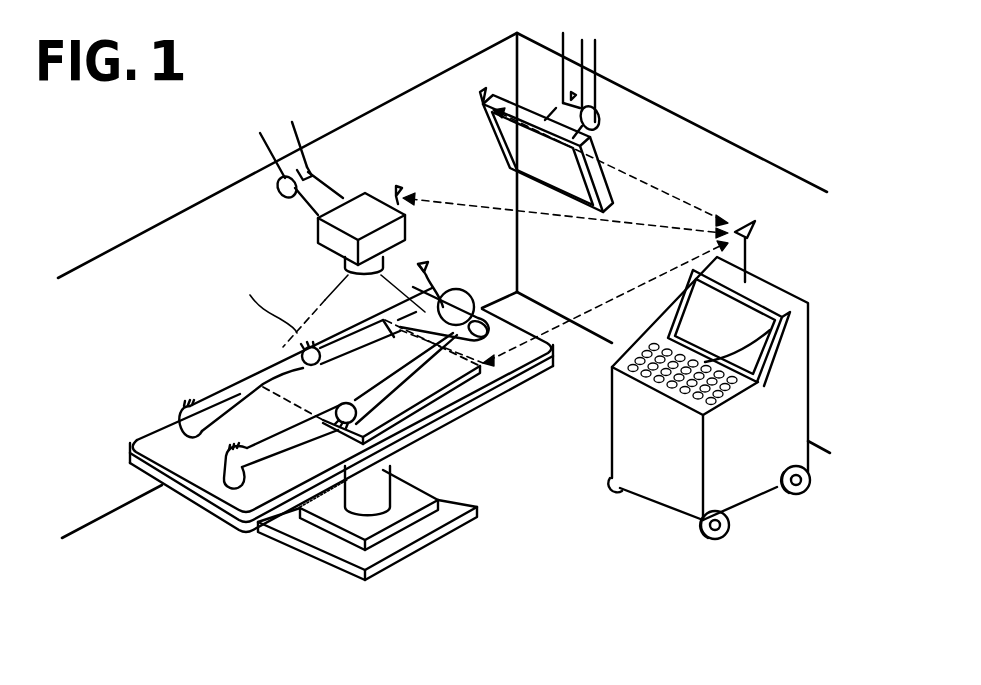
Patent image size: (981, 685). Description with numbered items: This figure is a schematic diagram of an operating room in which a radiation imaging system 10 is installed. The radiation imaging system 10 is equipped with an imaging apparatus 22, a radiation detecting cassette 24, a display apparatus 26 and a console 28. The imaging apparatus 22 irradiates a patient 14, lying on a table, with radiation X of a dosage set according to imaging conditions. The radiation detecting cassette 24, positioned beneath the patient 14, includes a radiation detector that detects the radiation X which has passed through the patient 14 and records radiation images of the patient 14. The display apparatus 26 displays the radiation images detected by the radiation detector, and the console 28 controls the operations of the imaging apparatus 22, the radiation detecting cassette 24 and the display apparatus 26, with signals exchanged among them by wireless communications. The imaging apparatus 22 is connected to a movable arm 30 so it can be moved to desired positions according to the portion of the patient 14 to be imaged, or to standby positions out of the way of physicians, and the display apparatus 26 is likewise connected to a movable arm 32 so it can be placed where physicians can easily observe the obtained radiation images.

The radiation imaging system 10 is at (466, 263).
The patient 14 is at (217, 413).
The imaging apparatus 22 is at (306, 236).
The radiation detecting cassette 24 is at (430, 402).
The display apparatus 26 is at (482, 157).
The console 28 is at (596, 451).
The movable arm 30 is at (295, 155).
The movable arm 32 is at (588, 63).